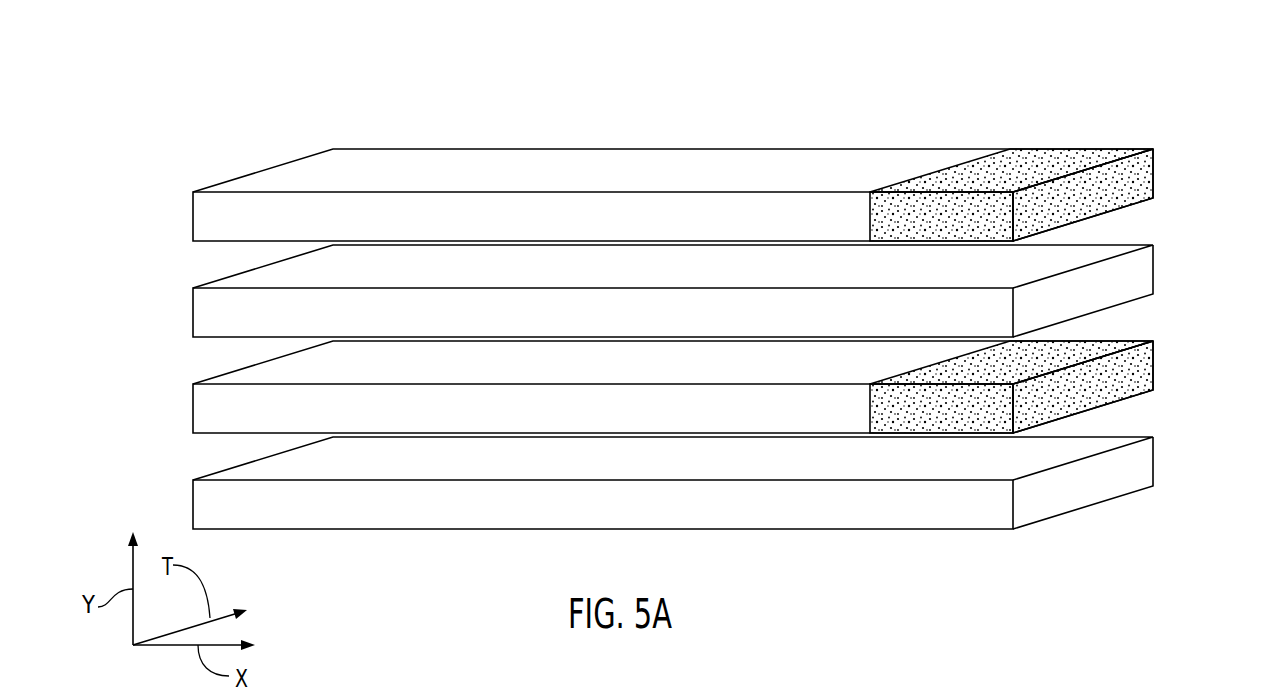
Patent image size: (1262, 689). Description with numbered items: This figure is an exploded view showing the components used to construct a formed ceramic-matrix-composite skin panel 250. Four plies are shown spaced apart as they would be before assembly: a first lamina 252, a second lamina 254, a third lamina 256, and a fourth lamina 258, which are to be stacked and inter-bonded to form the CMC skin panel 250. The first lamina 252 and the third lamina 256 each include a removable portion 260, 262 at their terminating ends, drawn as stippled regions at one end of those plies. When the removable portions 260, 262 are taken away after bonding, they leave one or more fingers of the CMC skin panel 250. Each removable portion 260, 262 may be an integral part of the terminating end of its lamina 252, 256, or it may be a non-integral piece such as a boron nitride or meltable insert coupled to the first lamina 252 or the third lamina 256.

The CMC skin panel 250 is at (977, 83).
The first lamina 252 is at (193, 216).
The second lamina 254 is at (193, 312).
The third lamina 256 is at (193, 408).
The fourth lamina 258 is at (193, 506).
The removable portion 260 is at (1152, 178).
The removable portion 262 is at (1138, 368).